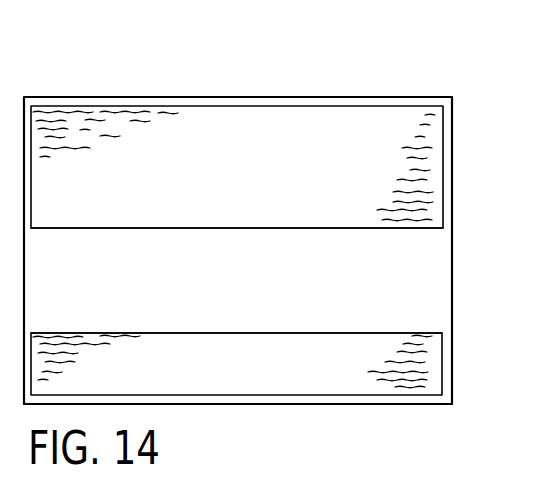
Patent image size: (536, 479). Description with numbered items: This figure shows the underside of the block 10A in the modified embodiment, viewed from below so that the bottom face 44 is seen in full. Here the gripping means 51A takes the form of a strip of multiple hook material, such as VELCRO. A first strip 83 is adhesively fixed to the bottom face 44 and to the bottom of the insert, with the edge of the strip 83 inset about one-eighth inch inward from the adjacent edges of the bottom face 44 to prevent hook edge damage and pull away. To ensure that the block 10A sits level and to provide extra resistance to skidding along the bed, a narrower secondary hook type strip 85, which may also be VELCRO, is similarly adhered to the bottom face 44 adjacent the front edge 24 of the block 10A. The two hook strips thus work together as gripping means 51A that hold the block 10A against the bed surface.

The block 10A is at (65, 80).
The front edge 24 is at (232, 404).
The bottom face 44 is at (327, 284).
The gripping means 51A is at (293, 127).
The first strip 83 is at (181, 118).
The secondary hook type strip 85 is at (150, 345).